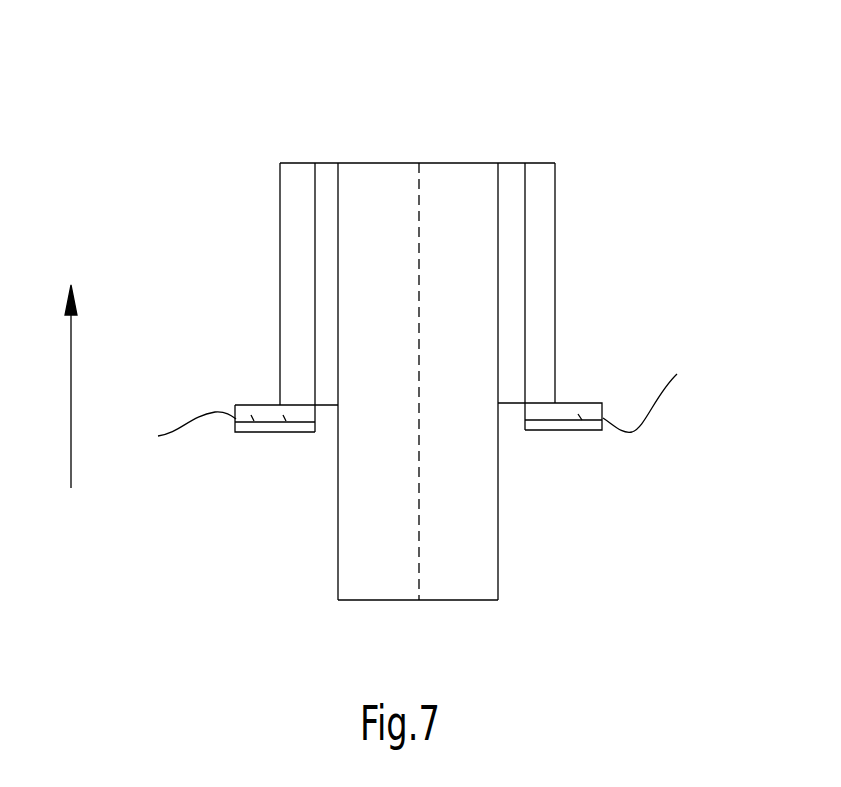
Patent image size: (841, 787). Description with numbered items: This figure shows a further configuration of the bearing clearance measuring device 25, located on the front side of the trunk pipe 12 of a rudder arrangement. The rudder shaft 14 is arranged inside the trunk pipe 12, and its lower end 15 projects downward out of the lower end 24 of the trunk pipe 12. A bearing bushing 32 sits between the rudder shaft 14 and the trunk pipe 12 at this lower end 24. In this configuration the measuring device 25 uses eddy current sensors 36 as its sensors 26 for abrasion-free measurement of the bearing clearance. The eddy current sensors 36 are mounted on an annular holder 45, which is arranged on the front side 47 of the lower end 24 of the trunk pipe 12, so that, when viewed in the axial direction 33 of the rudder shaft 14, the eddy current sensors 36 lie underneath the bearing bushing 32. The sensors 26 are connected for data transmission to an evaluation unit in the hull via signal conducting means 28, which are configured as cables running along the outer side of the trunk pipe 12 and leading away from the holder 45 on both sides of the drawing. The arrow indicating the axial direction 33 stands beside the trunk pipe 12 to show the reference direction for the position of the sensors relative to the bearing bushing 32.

The trunk pipe 12 is at (278, 335).
The rudder shaft 14 is at (381, 192).
The lower end of the rudder shaft 15 is at (338, 550).
The lower end of the trunk pipe 24 is at (556, 226).
The bearing clearance measuring device 25 is at (573, 433).
The sensors 26 is at (285, 418).
The signal conducting means 28 is at (663, 397).
The bearing bushing 32 is at (323, 323).
The axial direction 33 is at (70, 362).
The eddy current sensors 36 is at (253, 418).
The annular holder 45 is at (262, 432).
The front side 47 is at (302, 406).